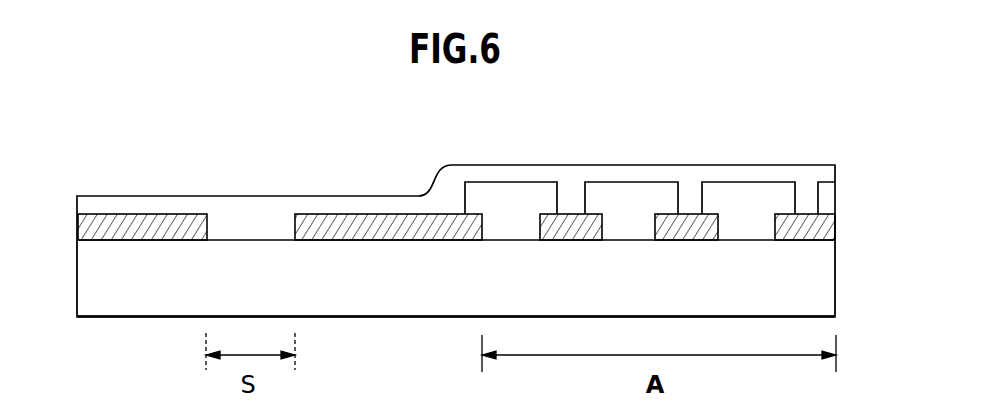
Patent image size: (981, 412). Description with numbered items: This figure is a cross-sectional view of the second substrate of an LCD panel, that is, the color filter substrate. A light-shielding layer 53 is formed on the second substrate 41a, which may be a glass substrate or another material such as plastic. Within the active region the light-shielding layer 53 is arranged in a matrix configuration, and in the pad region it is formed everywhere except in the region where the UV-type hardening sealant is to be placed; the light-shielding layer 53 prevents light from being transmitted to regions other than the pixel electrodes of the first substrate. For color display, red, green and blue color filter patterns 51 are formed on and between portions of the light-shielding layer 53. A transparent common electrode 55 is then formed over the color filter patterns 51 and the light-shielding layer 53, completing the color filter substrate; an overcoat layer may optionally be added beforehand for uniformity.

The second substrate 41a is at (835, 283).
The light-shielding layer 53 is at (82, 224).
The transparent common electrode 55 is at (830, 173).
The color filter pattern 51 is at (627, 190).